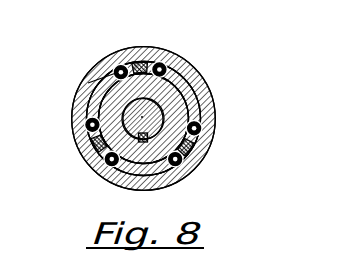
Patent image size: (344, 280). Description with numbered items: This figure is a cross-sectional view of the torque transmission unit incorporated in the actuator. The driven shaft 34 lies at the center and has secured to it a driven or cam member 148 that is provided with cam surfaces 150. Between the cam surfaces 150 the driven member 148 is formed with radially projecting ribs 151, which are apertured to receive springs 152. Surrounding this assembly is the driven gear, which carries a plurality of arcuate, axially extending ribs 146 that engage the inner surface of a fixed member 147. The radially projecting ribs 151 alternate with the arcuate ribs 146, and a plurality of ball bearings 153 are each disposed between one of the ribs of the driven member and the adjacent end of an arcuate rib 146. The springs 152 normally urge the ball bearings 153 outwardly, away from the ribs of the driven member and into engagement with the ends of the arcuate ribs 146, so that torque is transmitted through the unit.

The cam surfaces 150 is at (84, 72).
The driven or cam member 148 is at (181, 86).
The arcuate axially extending ribs 146 is at (104, 96).
The radially projecting ribs 151 is at (150, 48).
The fixed member 147 is at (190, 168).
The driven shaft 34 is at (172, 68).
The springs 152 is at (142, 62).
The ball bearings 153 is at (121, 58).